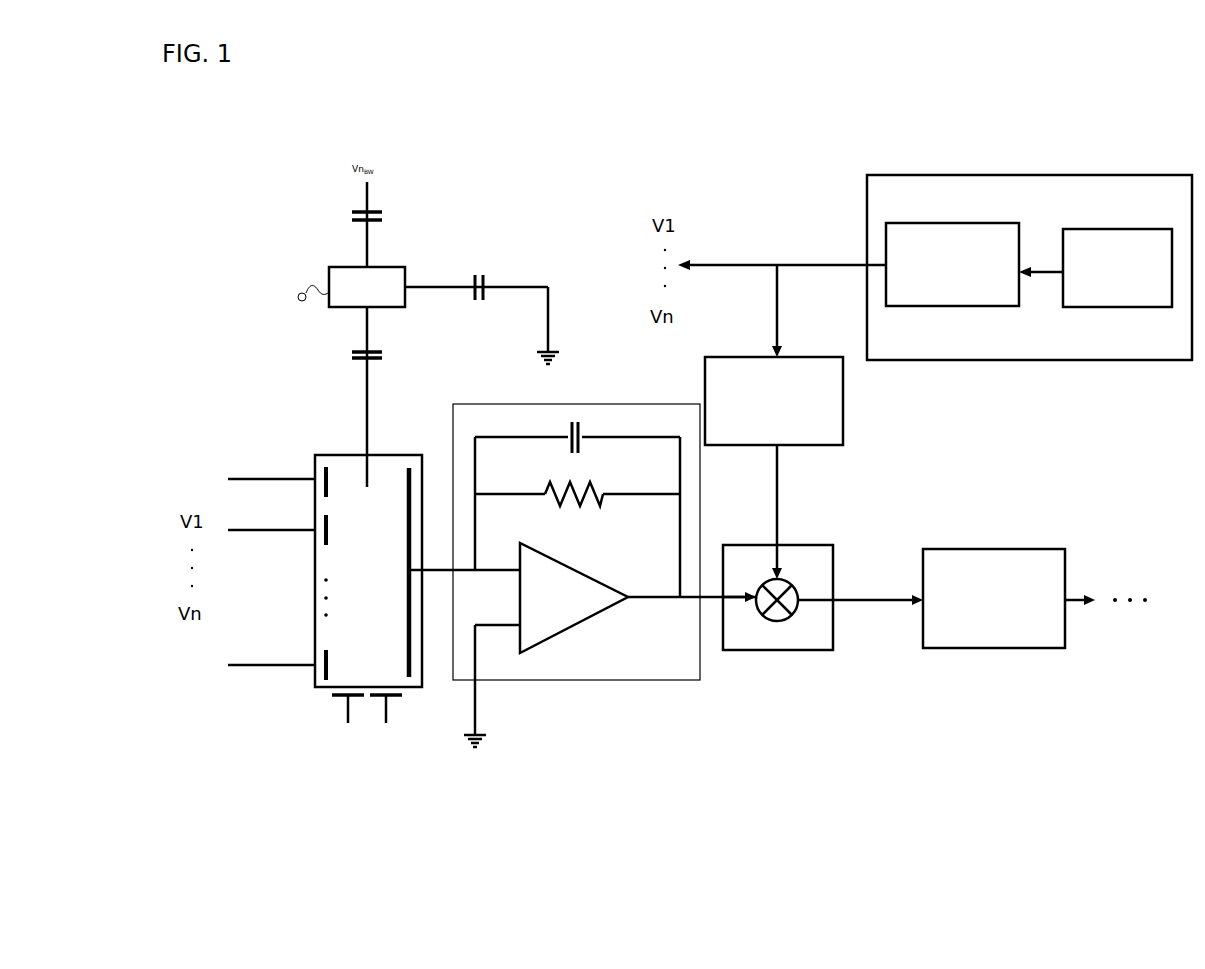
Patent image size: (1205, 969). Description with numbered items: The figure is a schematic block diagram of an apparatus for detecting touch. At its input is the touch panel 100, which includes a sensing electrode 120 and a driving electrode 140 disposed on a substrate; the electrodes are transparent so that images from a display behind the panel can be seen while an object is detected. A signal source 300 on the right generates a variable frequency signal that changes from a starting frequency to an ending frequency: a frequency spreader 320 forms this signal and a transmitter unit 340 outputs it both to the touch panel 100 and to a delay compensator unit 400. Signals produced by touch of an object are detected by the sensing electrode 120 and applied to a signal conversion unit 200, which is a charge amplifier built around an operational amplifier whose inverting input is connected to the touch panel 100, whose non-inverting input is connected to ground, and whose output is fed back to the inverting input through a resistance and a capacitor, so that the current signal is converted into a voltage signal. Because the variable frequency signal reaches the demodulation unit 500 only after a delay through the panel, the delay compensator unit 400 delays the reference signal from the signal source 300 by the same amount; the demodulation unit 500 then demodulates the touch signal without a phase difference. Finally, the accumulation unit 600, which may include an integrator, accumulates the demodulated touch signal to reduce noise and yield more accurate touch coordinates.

The touch panel 100 is at (320, 455).
The sensing electrode 120 is at (410, 467).
The driving electrode 140 is at (326, 667).
The signal conversion unit 200 is at (694, 682).
The signal source 300 is at (1029, 279).
The frequency spreader 320 is at (1120, 228).
The transmitter unit 340 is at (955, 222).
The delay compensator unit 400 is at (832, 447).
The demodulation unit 500 is at (832, 652).
The accumulation unit 600 is at (1063, 650).